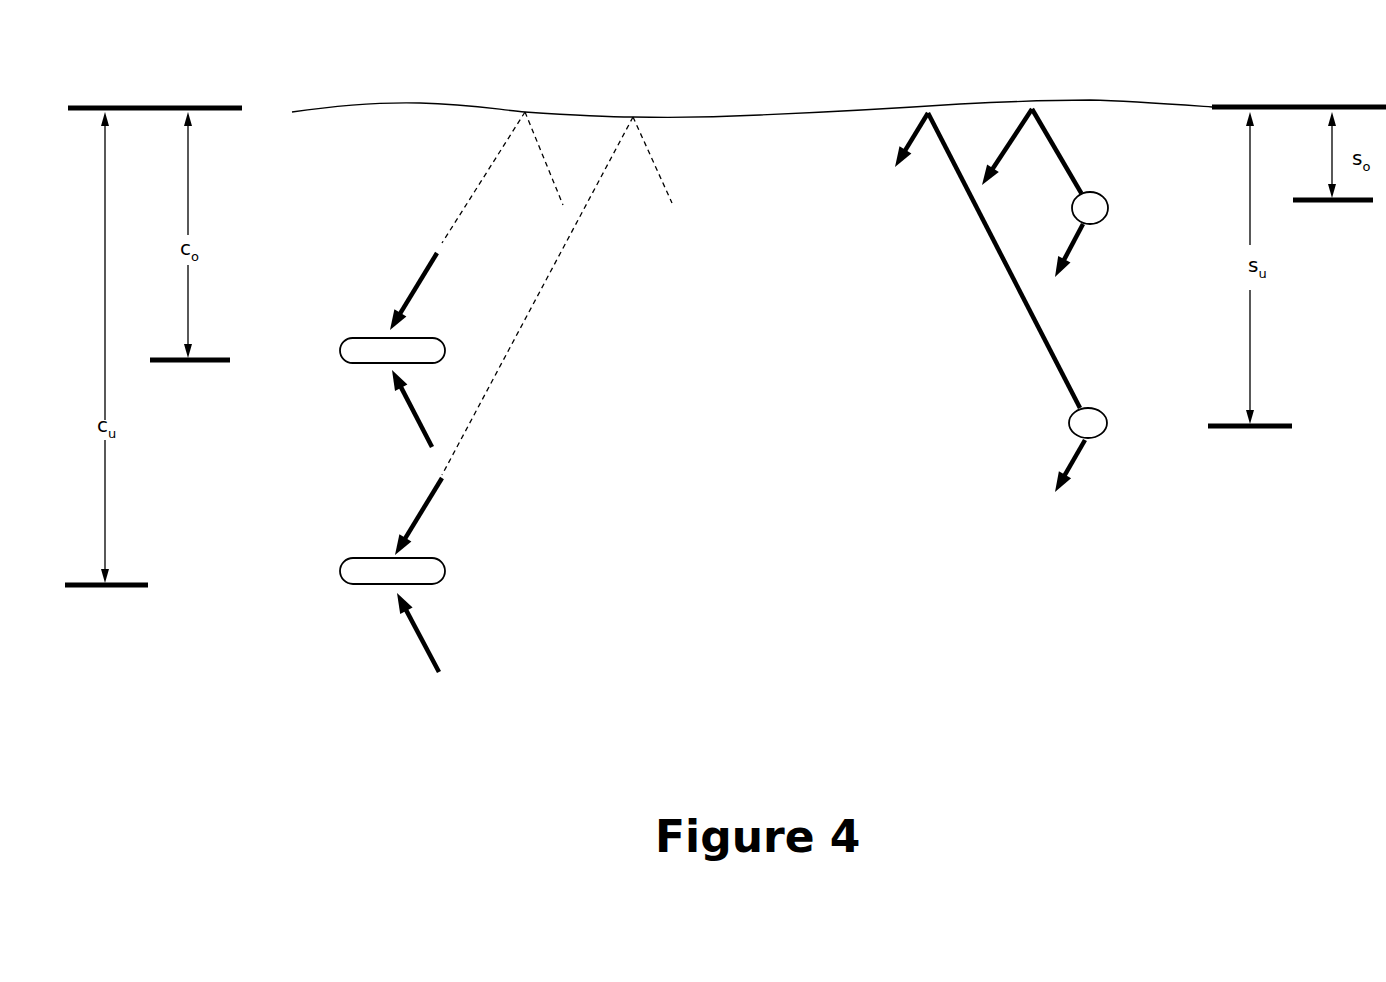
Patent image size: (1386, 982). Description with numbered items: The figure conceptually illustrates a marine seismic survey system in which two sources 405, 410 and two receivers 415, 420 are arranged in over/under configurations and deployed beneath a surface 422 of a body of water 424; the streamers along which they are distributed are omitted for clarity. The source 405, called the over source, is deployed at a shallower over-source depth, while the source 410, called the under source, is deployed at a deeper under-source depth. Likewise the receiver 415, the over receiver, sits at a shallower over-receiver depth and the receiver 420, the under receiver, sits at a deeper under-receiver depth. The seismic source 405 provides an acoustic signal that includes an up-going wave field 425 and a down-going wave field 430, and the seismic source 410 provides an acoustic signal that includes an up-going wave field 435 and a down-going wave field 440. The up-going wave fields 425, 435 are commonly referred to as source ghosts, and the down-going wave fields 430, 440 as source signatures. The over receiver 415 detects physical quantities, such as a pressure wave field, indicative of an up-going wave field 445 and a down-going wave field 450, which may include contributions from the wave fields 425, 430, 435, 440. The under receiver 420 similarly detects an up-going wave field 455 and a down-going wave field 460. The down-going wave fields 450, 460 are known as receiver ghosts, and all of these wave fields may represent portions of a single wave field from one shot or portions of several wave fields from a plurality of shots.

The source 405 is at (1108, 208).
The source 410 is at (1107, 422).
The receiver 415 is at (340, 350).
The receiver 420 is at (340, 571).
The surface 422 is at (1097, 100).
The body of water 424 is at (778, 687).
The up-going wave field 425 is at (1010, 138).
The down-going wave field 430 is at (1083, 248).
The up-going wave field 435 is at (915, 127).
The down-going wave field 440 is at (1080, 460).
The up-going wave field 445 is at (418, 405).
The down-going wave field 450 is at (412, 292).
The up-going wave field 455 is at (422, 634).
The down-going wave field 460 is at (420, 515).